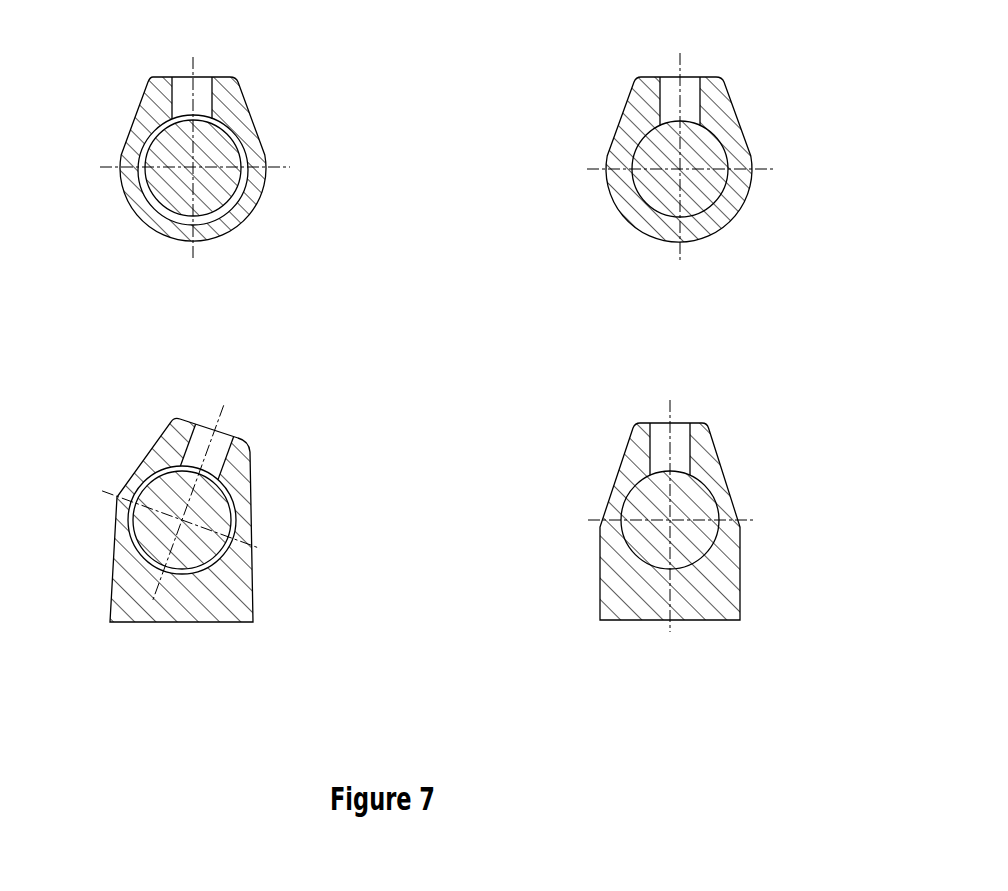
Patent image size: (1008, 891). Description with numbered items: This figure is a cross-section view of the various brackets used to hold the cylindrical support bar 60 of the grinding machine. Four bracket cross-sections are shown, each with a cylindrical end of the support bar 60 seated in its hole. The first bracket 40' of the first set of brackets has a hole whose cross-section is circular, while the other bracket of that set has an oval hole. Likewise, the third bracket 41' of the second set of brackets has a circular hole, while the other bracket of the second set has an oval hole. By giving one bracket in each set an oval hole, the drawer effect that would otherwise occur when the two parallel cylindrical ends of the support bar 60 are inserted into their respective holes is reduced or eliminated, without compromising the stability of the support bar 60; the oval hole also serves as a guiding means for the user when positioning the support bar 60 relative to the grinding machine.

The first bracket 40' is at (655, 156).
The third bracket 41' is at (689, 510).
The support bar 60 is at (193, 166).